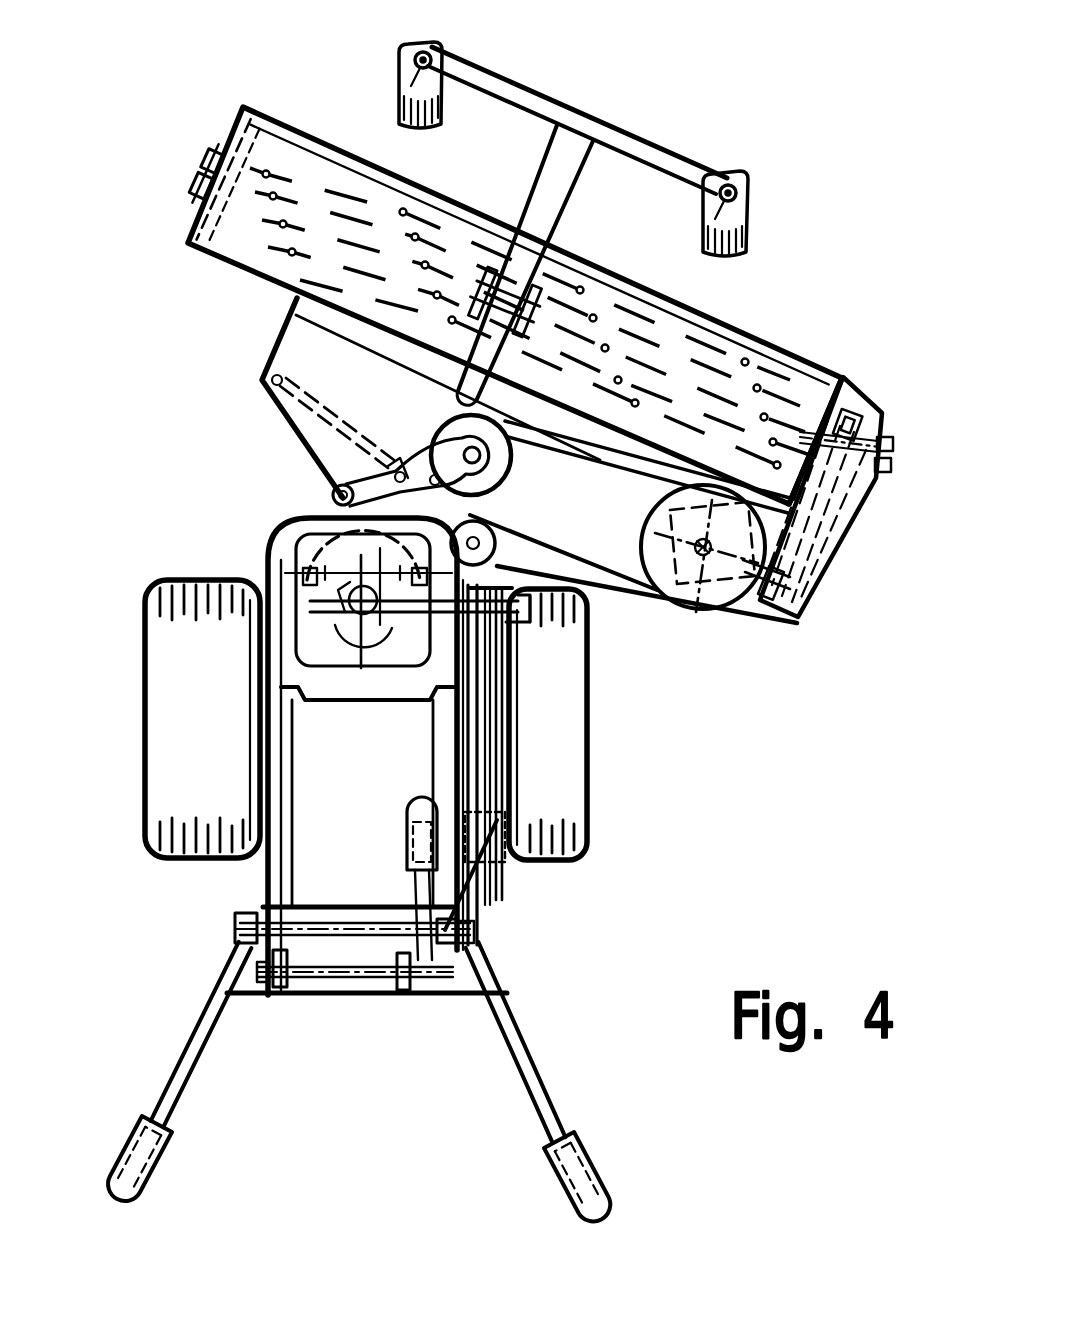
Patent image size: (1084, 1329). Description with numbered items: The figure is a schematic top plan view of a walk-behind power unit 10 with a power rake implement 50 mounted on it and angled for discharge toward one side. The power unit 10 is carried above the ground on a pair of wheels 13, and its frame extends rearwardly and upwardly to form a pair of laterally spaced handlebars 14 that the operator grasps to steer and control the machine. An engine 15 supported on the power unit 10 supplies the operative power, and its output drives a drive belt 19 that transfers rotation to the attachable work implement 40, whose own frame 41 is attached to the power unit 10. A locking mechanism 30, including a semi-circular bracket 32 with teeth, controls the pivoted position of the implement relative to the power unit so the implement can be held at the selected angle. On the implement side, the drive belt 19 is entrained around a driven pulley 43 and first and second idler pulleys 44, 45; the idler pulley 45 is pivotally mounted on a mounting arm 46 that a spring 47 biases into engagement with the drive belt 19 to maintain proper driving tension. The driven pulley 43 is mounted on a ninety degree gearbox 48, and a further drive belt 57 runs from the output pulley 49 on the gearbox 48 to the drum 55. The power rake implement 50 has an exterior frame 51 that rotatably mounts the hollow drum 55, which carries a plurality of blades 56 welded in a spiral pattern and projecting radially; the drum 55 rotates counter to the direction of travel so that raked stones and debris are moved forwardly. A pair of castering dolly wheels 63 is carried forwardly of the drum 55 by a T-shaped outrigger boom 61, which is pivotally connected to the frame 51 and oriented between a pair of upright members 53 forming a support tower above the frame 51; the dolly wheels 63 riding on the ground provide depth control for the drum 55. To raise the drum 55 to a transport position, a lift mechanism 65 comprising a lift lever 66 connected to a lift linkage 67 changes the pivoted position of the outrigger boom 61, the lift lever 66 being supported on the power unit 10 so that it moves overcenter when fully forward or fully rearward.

The walk-behind power unit 10 is at (185, 935).
The wheels 13 is at (162, 750).
The handlebars 14 is at (150, 1178).
The engine 15 is at (343, 668).
The drive belt 19 is at (540, 443).
The locking mechanism 30 is at (275, 527).
The semi-circular bracket 32 is at (300, 547).
The work implement 40 is at (190, 405).
The frame of the work implement 41 is at (273, 347).
The driven pulley 43 is at (700, 612).
The first idler pulley 44 is at (498, 546).
The second idler pulley 45 is at (456, 432).
The mounting arm 46 is at (330, 470).
The spring 47 is at (276, 426).
The ninety degree gearbox 48 is at (728, 600).
The output pulley 49 is at (800, 615).
The power rake implement 50 is at (226, 68).
The exterior frame 51 is at (852, 379).
The upright members 53 is at (495, 262).
The drum 55 is at (824, 394).
The blades 56 is at (425, 267).
The drive belt 57 is at (845, 527).
The T-shaped outrigger boom 61 is at (608, 130).
The dolly wheels 63 is at (437, 56).
The lift mechanism 65 is at (385, 1002).
The lift lever 66 is at (407, 833).
The lift linkage 67 is at (512, 760).